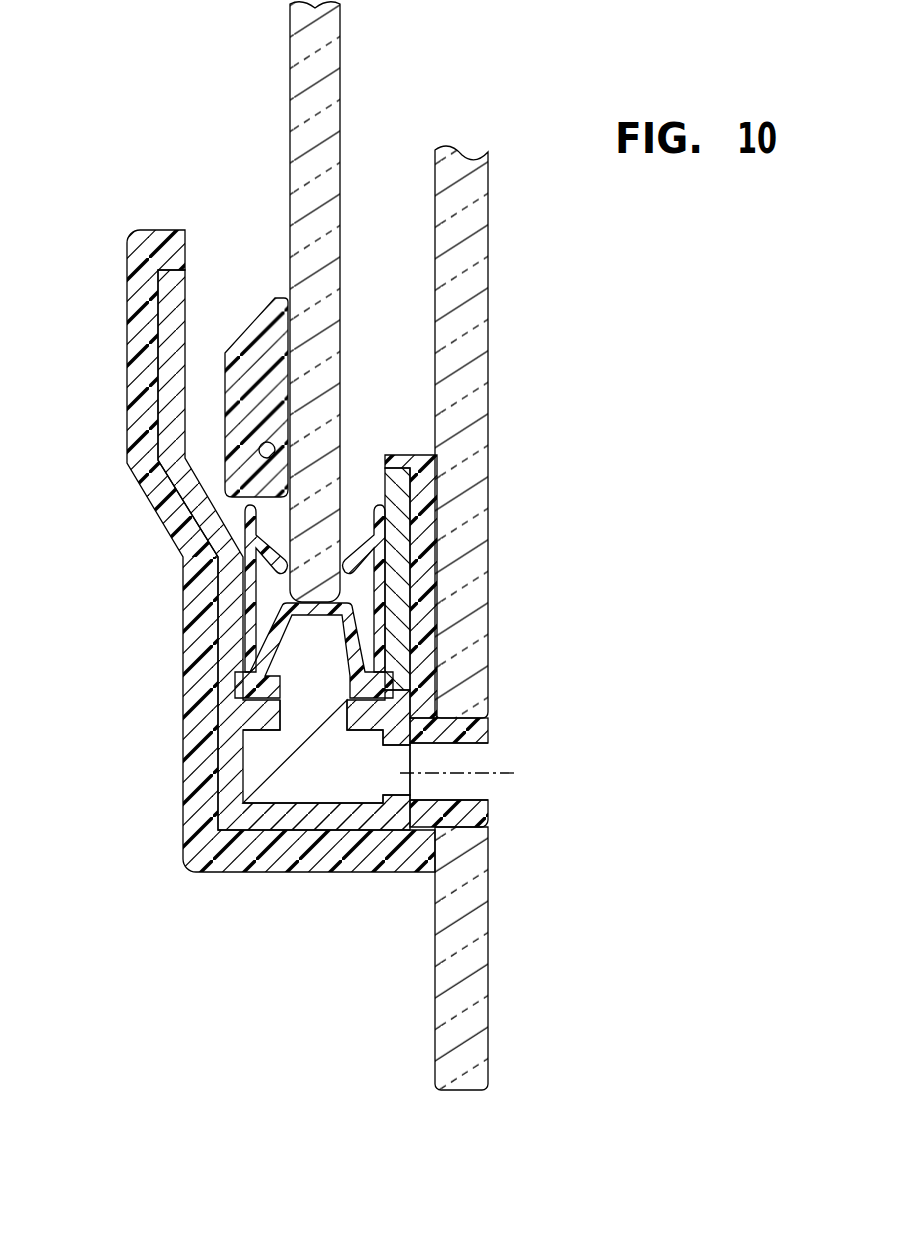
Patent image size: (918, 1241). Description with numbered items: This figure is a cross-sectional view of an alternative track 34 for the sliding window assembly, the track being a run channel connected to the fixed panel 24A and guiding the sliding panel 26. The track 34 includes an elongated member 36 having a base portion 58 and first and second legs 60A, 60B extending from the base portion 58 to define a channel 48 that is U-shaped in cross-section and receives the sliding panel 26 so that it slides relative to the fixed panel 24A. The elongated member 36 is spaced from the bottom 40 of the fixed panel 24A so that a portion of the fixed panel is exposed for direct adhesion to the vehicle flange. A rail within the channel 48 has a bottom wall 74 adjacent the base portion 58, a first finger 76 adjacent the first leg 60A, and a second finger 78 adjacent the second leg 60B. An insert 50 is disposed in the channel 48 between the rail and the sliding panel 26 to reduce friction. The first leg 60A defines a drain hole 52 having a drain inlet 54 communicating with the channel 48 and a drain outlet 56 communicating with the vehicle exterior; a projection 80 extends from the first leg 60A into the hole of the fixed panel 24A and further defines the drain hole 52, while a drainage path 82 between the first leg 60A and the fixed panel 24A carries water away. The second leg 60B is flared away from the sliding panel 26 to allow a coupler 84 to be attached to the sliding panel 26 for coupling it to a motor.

The first fixed panel 24A is at (480, 331).
The sliding panel 26 is at (312, 88).
The track 34 is at (244, 597).
The elongated member 36 is at (197, 766).
The bottom of the fixed panel 40 is at (479, 1093).
The channel 48 is at (314, 531).
The insert 50 is at (278, 677).
The drain hole 52 is at (447, 748).
The drain inlet 54 is at (378, 773).
The drain outlet 56 is at (494, 790).
The base portion 58 is at (297, 872).
The first leg 60A is at (422, 530).
The second leg 60B is at (215, 598).
The bottom wall 74 is at (338, 815).
The first finger 76 is at (398, 580).
The second finger 78 is at (228, 637).
The projection 80 is at (452, 815).
The drainage path 82 is at (513, 762).
The coupler 84 is at (258, 322).